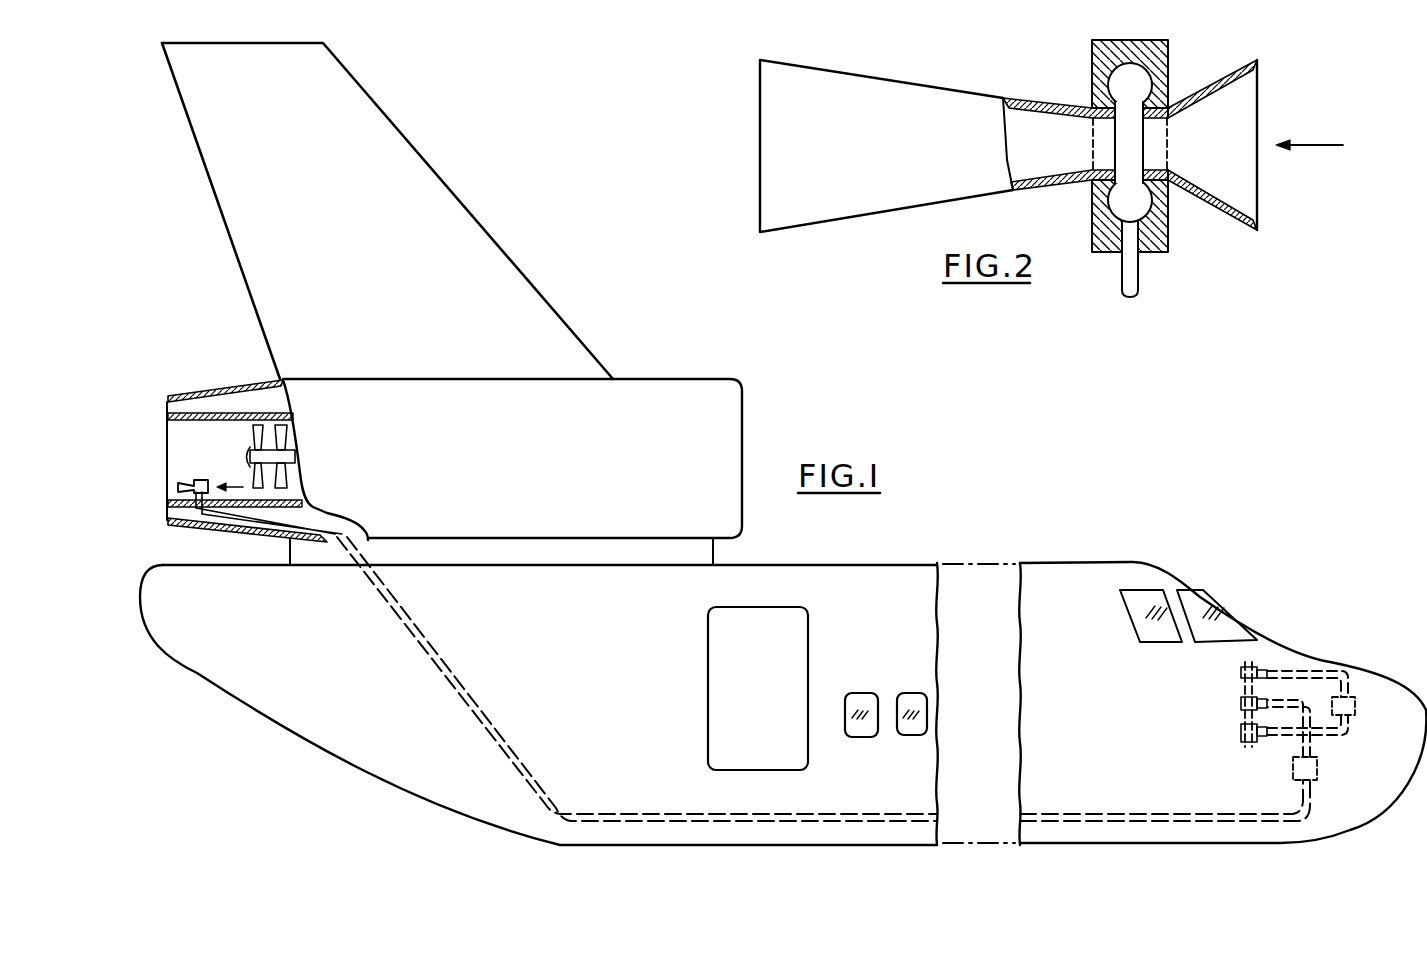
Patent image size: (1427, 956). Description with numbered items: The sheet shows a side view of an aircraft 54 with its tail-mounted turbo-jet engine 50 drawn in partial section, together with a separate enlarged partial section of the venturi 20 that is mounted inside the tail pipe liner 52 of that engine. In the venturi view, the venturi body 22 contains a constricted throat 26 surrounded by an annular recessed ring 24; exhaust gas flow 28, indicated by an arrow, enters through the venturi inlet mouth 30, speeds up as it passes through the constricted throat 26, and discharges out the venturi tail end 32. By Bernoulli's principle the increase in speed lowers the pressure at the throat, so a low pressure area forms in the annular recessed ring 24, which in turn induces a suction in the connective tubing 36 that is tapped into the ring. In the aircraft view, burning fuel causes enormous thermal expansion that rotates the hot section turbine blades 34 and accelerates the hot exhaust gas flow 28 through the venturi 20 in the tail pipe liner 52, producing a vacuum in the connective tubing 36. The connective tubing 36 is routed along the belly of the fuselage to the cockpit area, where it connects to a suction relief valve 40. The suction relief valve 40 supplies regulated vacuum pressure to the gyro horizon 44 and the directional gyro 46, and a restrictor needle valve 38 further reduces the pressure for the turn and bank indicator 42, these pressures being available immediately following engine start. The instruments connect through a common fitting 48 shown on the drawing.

In FIG. 1, the venturi 20 is at (188, 481).
In FIG. 2, the venturi 20 is at (882, 77).
In FIG. 2, the venturi body 22 is at (1092, 217).
In FIG. 2, the annular recessed ring 24 is at (1117, 80).
In FIG. 2, the constricted throat 26 is at (1108, 127).
In FIG. 1, the exhaust gas flow 28 is at (240, 486).
In FIG. 2, the exhaust gas flow 28 is at (1319, 143).
In FIG. 2, the venturi inlet mouth 30 is at (1263, 107).
In FIG. 2, the venturi tail end 32 is at (757, 147).
In FIG. 1, the hot section turbine blades 34 is at (253, 437).
In FIG. 1, the connective tubing 36 is at (490, 723).
In FIG. 2, the connective tubing 36 is at (1137, 267).
In FIG. 1, the restrictor needle valve 38 is at (1358, 703).
In FIG. 1, the suction relief valve 40 is at (1320, 765).
In FIG. 1, the turn and bank indicator 42 is at (1241, 677).
In FIG. 1, the gyro horizon 44 is at (1241, 703).
In FIG. 1, the directional gyro 46 is at (1241, 730).
In FIG. 1, the manifold 48 is at (1244, 665).
In FIG. 1, the turbo-jet engine 50 is at (713, 383).
In FIG. 1, the tail pipe liner 52 is at (167, 417).
In FIG. 1, the aircraft 54 is at (1135, 560).